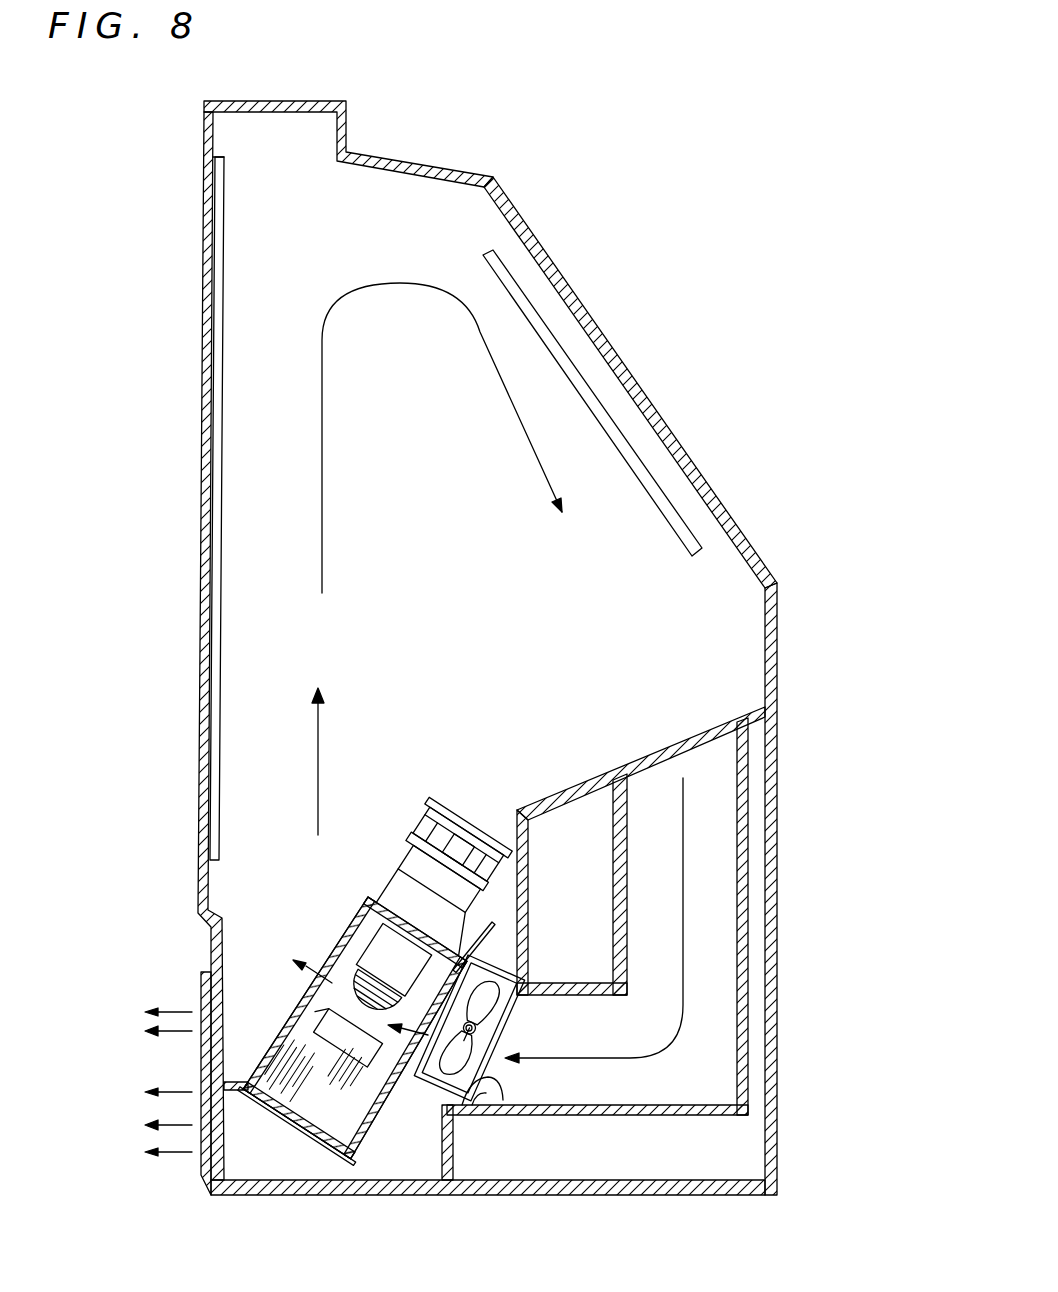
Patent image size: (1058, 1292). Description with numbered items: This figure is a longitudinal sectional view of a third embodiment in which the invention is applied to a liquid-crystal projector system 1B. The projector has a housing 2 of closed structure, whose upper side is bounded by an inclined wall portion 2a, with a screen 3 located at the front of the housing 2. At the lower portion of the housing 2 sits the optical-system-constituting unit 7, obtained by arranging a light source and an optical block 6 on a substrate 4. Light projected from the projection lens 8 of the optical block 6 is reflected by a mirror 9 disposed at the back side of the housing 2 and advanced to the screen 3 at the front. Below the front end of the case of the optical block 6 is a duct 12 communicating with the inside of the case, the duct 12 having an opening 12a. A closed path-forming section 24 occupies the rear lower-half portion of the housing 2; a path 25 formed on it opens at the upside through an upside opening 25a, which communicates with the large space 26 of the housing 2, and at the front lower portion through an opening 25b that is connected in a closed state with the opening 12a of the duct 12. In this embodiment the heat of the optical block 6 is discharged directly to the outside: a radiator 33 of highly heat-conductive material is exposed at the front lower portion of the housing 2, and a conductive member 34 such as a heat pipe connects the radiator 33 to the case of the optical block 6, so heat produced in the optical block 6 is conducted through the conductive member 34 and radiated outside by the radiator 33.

The liquid-crystal projector system 1B is at (482, 155).
The housing 2 is at (398, 150).
The inclined wall of cabinet 2a is at (690, 450).
The screen 3 is at (224, 420).
The substrate 4 is at (363, 1135).
The optical block 6 is at (371, 896).
The optical-system-constituting unit 7 is at (380, 998).
The projection lens 8 is at (457, 800).
The mirror 9 is at (658, 508).
The duct 12 is at (465, 1092).
The opening 12a is at (468, 1100).
The closed path-forming section 24 is at (565, 788).
The path 25 is at (742, 928).
The upside opening 25a is at (738, 718).
The opening 25b is at (497, 1108).
The large space 26 is at (357, 228).
The radiator 33 is at (197, 1160).
The conductive member 34 is at (233, 1095).